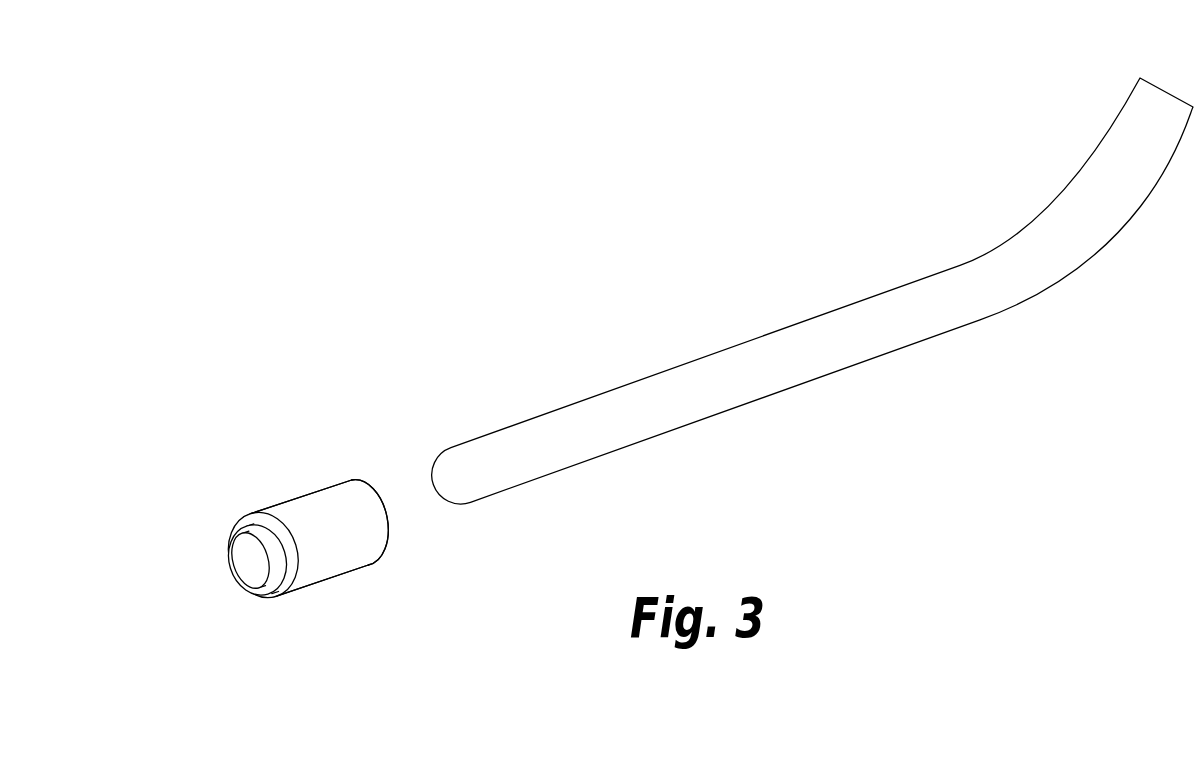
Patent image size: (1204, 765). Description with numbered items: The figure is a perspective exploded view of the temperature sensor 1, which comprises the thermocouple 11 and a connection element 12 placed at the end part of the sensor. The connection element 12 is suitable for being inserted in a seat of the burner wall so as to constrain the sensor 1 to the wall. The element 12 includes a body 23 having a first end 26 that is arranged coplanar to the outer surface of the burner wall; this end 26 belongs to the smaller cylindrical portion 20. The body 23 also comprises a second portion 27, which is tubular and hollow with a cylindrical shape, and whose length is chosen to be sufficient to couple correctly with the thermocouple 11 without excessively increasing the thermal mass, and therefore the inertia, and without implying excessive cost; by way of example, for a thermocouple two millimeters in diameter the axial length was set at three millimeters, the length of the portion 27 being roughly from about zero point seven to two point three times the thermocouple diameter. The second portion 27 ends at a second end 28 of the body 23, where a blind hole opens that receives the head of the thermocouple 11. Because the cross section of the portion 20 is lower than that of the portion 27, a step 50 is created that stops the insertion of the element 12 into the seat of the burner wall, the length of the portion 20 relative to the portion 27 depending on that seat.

The temperature sensor 1 is at (668, 373).
The thermocouple 11 is at (715, 383).
The connection element 12 is at (296, 549).
The portion 20 is at (229, 574).
The body 23 is at (342, 552).
The first end 26 is at (247, 563).
The second portion 27 is at (412, 534).
The second end 28 is at (383, 500).
The step 50 is at (253, 522).